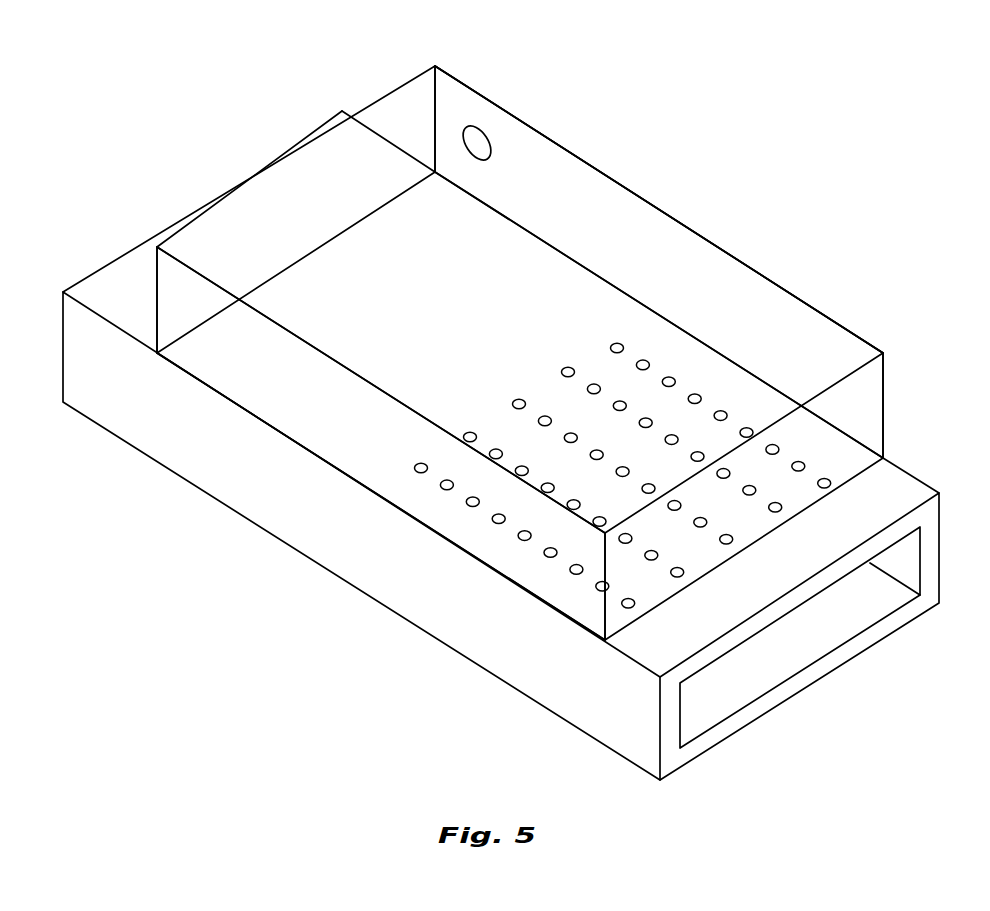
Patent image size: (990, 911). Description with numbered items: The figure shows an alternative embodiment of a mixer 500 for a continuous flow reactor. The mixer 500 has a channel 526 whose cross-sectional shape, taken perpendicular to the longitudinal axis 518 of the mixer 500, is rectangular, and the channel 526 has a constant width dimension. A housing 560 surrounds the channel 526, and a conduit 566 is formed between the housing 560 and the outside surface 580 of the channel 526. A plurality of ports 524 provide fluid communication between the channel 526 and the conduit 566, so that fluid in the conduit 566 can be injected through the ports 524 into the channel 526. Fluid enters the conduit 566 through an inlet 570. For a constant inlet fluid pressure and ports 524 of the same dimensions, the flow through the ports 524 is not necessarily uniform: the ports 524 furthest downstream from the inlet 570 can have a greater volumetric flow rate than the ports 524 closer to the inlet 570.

The mixer 500 is at (849, 216).
The longitudinal axis 518 is at (82, 143).
The ports 524 is at (701, 395).
The channel 526 is at (723, 690).
The housing 560 is at (884, 408).
The conduit 566 is at (837, 324).
The inlet 570 is at (478, 134).
The outside surface of the channel 580 is at (427, 509).